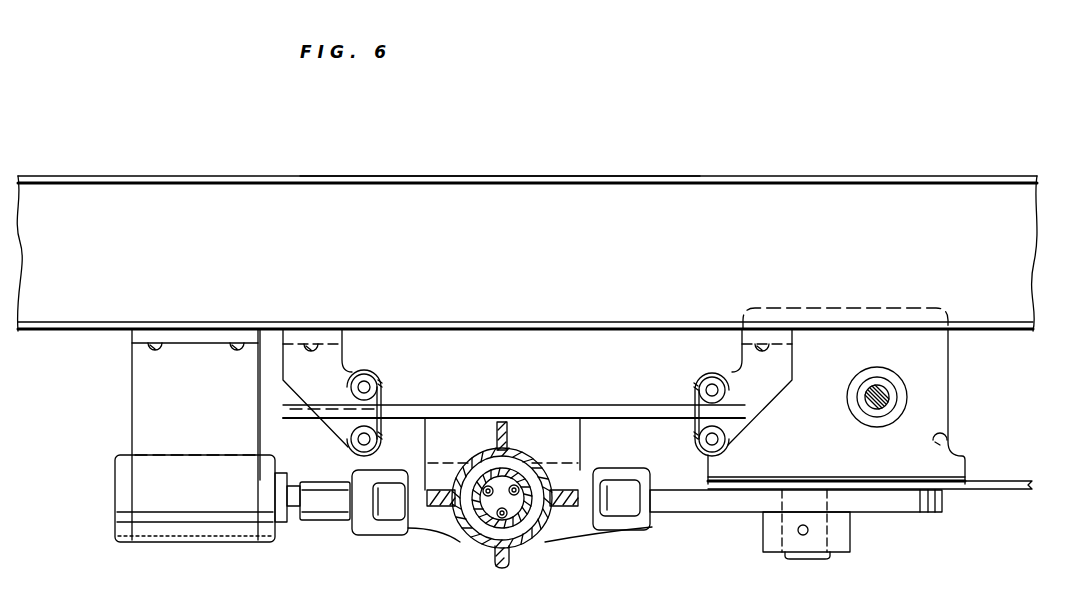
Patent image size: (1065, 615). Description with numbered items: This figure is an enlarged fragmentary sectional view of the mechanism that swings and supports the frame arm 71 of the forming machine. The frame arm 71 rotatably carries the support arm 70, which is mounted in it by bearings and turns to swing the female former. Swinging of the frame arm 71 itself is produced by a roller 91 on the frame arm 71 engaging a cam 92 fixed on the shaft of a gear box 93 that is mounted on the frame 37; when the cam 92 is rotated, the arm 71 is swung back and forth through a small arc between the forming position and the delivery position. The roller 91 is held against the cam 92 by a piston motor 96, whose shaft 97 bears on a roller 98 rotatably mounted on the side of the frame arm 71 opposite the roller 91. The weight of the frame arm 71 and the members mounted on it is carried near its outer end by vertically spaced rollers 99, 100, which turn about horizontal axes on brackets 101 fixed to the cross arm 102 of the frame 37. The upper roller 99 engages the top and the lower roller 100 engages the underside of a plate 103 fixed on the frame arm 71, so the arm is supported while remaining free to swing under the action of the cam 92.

The frame 37 is at (648, 128).
The cross arm 102 is at (476, 142).
The piston motor 96 is at (200, 527).
The shaft 97 is at (322, 512).
The roller 98 is at (372, 498).
The brackets 101 is at (325, 362).
The roller 99 is at (384, 381).
The roller 100 is at (383, 427).
The plate 103 is at (570, 388).
The support arm 70 is at (488, 515).
The frame arm 71 is at (488, 540).
The roller 91 is at (618, 505).
The cam 92 is at (717, 500).
The gear box 93 is at (938, 384).